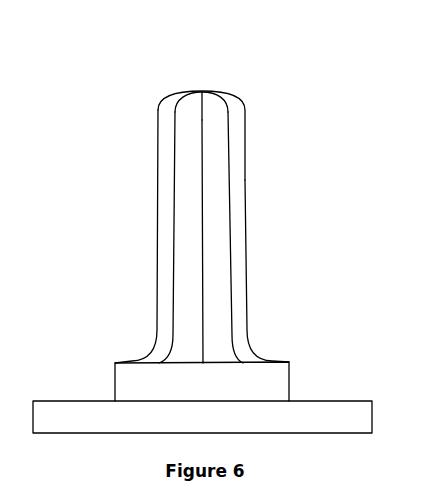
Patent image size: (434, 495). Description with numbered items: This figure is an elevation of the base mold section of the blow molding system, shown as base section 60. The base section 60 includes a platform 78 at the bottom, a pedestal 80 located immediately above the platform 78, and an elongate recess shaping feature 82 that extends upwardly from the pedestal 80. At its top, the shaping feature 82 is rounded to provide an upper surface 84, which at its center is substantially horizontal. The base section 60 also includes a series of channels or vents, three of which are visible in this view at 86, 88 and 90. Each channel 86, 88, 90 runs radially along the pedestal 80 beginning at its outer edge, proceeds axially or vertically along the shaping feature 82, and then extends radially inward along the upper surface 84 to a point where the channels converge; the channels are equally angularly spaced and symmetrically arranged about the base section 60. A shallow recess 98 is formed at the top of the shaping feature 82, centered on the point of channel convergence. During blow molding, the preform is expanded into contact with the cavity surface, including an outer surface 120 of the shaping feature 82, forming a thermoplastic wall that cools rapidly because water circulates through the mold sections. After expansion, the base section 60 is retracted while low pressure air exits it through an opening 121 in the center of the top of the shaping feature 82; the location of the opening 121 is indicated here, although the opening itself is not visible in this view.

The base section 60 is at (115, 146).
The platform 78 is at (82, 410).
The pedestal 80 is at (291, 374).
The elongate recess shaping feature 82 is at (246, 203).
The upper surface 84 is at (218, 92).
The channel 86 is at (172, 222).
The channel 88 is at (232, 250).
The channel 90 is at (234, 302).
The shallow recess 98 is at (192, 90).
The outer surface 120 is at (246, 150).
The opening 121 is at (206, 91).